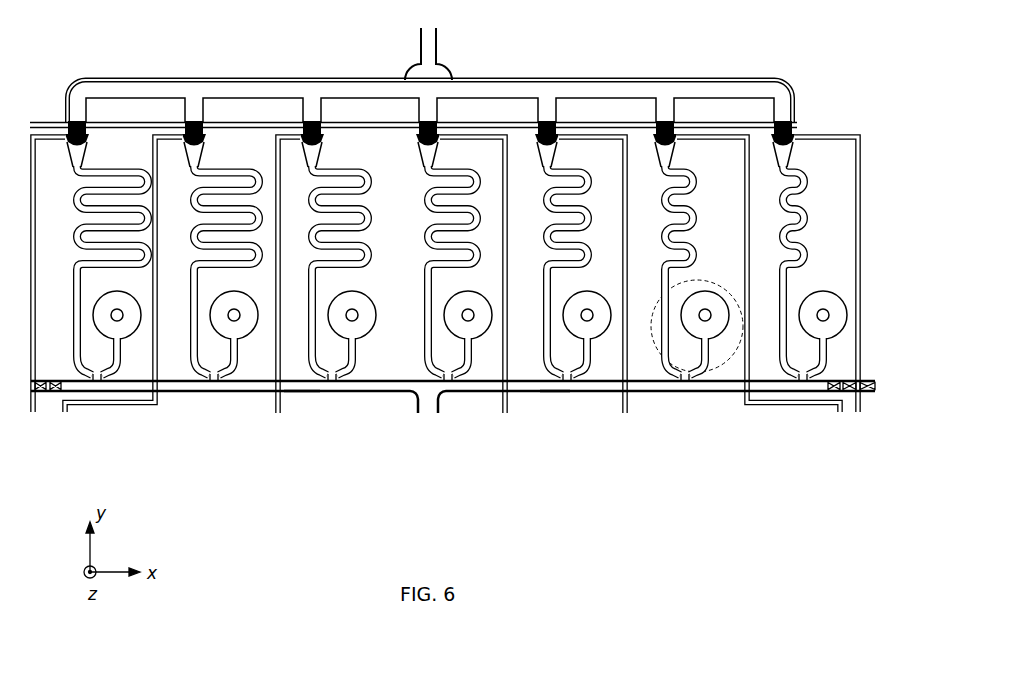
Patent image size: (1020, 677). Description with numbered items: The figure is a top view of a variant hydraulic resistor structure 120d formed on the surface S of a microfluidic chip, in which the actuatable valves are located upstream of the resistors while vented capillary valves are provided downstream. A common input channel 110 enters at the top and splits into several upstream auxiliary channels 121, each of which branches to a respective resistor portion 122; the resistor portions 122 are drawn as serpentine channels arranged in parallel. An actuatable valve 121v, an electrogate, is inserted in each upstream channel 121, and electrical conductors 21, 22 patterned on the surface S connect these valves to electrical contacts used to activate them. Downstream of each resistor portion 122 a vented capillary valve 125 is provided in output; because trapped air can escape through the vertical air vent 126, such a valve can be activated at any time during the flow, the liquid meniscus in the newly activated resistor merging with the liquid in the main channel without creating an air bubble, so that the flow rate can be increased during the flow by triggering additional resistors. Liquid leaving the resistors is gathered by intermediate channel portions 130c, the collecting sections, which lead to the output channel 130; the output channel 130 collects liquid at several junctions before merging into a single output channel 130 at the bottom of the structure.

The electrical conductor 21 is at (158, 408).
The electrical conductor 22 is at (232, 120).
The input channel 110 is at (421, 41).
The hydraulic resistor structure 120d is at (292, 452).
The upstream auxiliary channel 121 is at (822, 75).
The actuatable valve 121v is at (558, 107).
The resistor portion 122 is at (880, 138).
The vented capillary valve 125 is at (880, 283).
The vertical air vent 126 is at (354, 308).
The output channel 130 is at (432, 413).
The intermediate channel portion 130c is at (293, 394).
The surface S is at (731, 236).